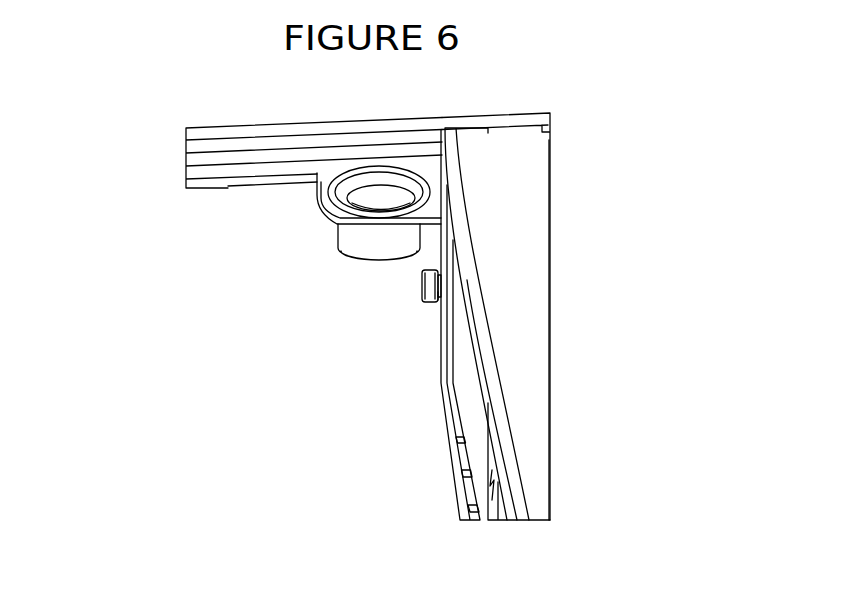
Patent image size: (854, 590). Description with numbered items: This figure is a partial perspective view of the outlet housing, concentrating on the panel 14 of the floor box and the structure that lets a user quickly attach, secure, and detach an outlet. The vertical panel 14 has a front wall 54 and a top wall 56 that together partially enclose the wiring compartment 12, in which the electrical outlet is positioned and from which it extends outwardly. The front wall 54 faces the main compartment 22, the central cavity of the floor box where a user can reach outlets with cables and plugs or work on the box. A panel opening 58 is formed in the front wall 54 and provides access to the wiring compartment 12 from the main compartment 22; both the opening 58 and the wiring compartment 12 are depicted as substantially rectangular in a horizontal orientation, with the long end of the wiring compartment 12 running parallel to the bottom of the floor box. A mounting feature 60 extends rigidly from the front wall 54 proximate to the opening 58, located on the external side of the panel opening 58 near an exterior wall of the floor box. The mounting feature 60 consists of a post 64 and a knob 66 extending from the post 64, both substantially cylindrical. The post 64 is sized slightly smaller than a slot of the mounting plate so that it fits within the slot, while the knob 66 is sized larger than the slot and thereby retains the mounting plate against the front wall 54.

The wiring compartment 12 is at (472, 440).
The panel 14 is at (543, 170).
The main compartment 22 is at (196, 220).
The front wall 54 is at (538, 482).
The top wall 56 is at (538, 325).
The panel opening 58 is at (477, 398).
The mounting feature 60 is at (413, 285).
The post 64 is at (443, 283).
The knob 66 is at (437, 297).